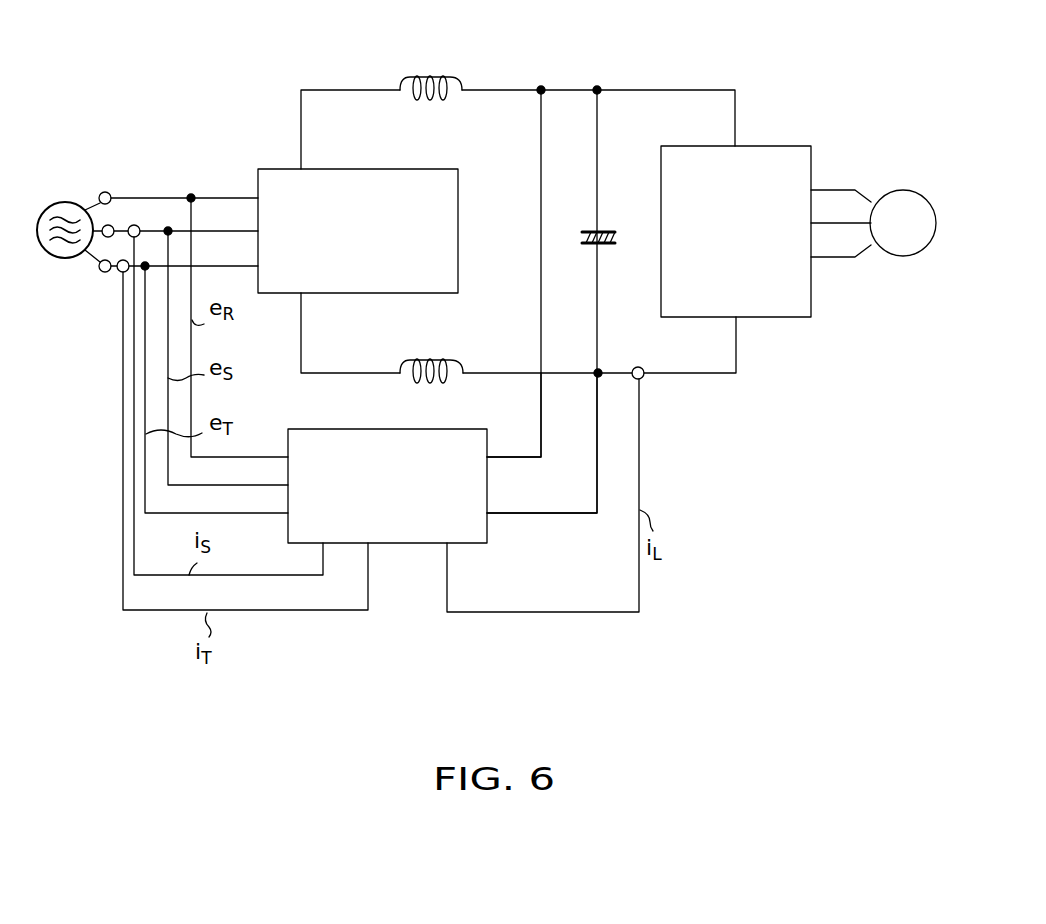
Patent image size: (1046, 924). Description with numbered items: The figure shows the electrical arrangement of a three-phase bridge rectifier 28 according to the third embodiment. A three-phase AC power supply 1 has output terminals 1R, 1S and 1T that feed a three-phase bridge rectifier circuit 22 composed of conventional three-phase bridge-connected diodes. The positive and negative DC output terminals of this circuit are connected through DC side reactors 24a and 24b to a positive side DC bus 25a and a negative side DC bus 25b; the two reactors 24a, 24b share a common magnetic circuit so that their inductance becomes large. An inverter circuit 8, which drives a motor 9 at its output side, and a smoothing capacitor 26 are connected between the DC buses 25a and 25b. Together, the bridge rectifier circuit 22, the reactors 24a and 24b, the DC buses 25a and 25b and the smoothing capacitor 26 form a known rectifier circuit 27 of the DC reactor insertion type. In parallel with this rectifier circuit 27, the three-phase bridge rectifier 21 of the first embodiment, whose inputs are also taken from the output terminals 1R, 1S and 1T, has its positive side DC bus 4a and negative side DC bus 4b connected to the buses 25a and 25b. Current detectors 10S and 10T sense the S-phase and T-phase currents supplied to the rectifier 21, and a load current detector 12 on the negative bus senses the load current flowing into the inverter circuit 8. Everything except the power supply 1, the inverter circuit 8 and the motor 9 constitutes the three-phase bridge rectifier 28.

The three-phase AC power supply 1 is at (70, 202).
The output terminal 1R is at (105, 192).
The output terminal 1S is at (113, 223).
The current detector 10S is at (139, 227).
The output terminal 1T is at (101, 272).
The current detector 10T is at (120, 278).
The three-phase bridge rectifier circuit 22 is at (459, 198).
The reactor 24a is at (430, 73).
The positive side DC bus 25a is at (497, 88).
The rectifier circuit 27 is at (572, 79).
The smoothing capacitor 26 is at (621, 236).
The inverter circuit 8 is at (783, 146).
The motor 9 is at (901, 190).
The reactor 24b is at (430, 363).
The negative side DC bus 25b is at (506, 373).
The load current detector 12 is at (639, 368).
The three-phase bridge rectifier 28 is at (684, 380).
The positive side DC bus 4a is at (517, 455).
The negative side DC bus 4b is at (512, 516).
The three-phase bridge rectifier 21 is at (401, 558).